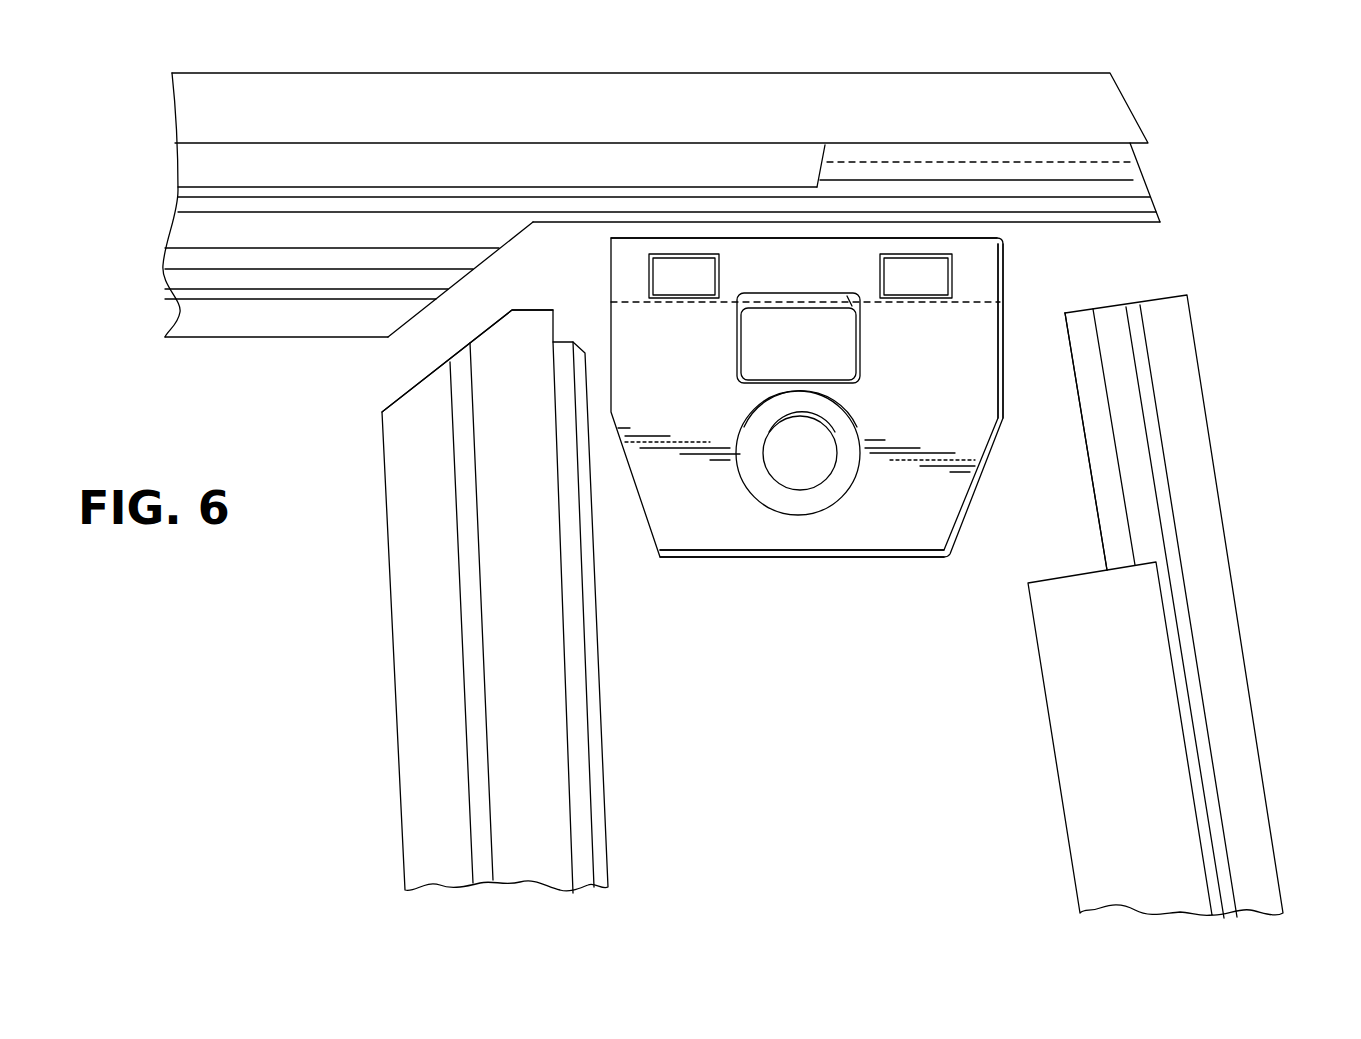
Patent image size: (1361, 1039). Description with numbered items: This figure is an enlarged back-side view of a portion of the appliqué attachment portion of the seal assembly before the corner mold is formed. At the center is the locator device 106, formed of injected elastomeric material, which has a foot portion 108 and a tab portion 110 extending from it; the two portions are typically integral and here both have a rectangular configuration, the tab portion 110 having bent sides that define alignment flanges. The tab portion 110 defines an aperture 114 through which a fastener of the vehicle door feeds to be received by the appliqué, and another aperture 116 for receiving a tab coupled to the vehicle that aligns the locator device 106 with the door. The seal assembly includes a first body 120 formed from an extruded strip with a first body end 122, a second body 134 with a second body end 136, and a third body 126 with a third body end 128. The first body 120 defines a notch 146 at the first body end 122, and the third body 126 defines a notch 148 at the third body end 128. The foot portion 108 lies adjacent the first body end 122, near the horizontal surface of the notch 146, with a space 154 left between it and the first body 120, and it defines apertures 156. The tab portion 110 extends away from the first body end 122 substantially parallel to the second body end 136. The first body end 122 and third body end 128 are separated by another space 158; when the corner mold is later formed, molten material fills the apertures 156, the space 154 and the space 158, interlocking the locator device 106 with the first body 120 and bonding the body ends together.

The locator device 106 is at (728, 558).
The foot portion 108 is at (973, 270).
The tab portion 110 is at (903, 533).
The aperture 114 is at (795, 485).
The aperture 116 is at (845, 335).
The first body 120 is at (203, 165).
The first body end 122 is at (438, 170).
The third body 126 is at (1173, 723).
The third body end 128 is at (1183, 428).
The second body 134 is at (423, 688).
The second body end 136 is at (422, 449).
The notch 146 is at (465, 283).
The notch 148 is at (1097, 515).
The space 154 is at (925, 237).
The aperture 156 is at (692, 258).
The space 158 is at (1157, 275).